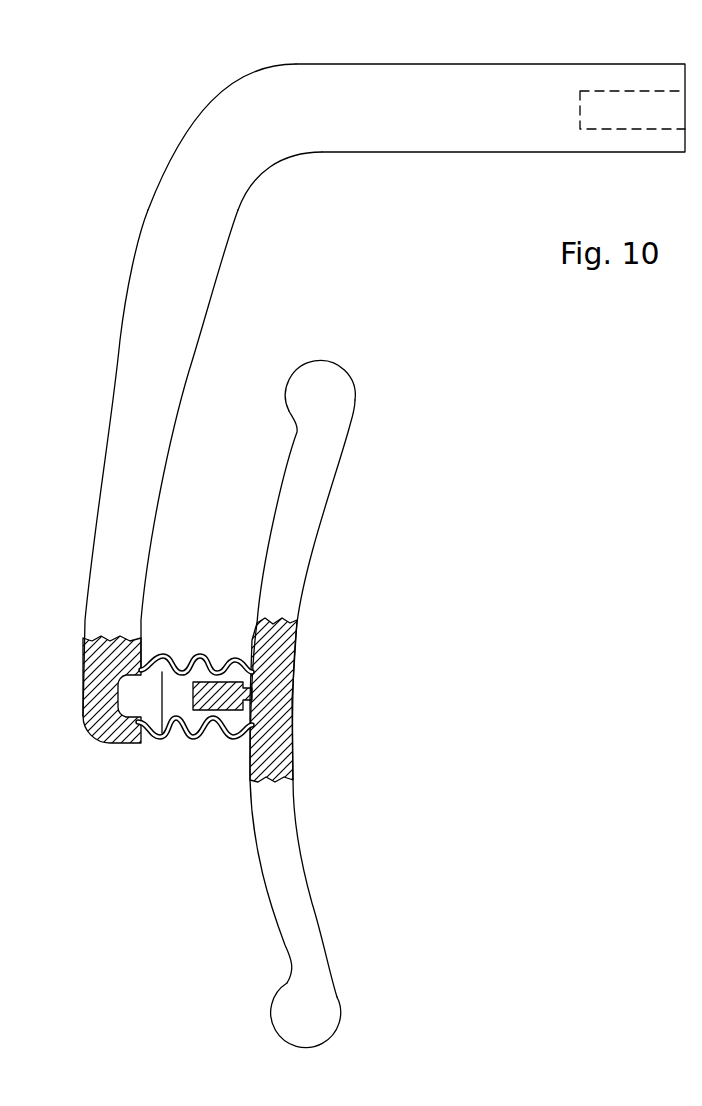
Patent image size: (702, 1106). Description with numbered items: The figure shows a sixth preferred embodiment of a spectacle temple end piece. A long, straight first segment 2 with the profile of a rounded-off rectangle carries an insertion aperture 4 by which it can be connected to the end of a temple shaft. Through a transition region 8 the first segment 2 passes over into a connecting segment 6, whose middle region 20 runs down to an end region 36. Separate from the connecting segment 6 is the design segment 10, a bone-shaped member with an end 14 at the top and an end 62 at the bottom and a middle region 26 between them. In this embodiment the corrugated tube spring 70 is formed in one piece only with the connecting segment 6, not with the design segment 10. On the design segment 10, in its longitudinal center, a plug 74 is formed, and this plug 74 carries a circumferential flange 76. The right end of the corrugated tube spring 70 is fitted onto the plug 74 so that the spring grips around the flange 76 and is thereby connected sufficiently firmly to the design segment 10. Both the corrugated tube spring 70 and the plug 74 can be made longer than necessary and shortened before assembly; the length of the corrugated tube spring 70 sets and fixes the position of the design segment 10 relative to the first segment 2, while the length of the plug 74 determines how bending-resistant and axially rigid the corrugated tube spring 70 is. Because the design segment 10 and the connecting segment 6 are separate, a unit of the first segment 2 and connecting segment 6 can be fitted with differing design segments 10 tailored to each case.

The segment 2 is at (441, 75).
The insertion aperture 4 is at (599, 107).
The connecting segment 6 is at (129, 243).
The transition region 8 is at (221, 118).
The design segment 10 is at (320, 525).
The end 14 is at (337, 382).
The middle region 20 is at (148, 315).
The middle region 26 is at (282, 650).
The end region 36 is at (100, 647).
The end 62 is at (295, 1008).
The corrugated tube spring 70 is at (155, 755).
The plug 74 is at (217, 717).
The flange 76 is at (247, 690).